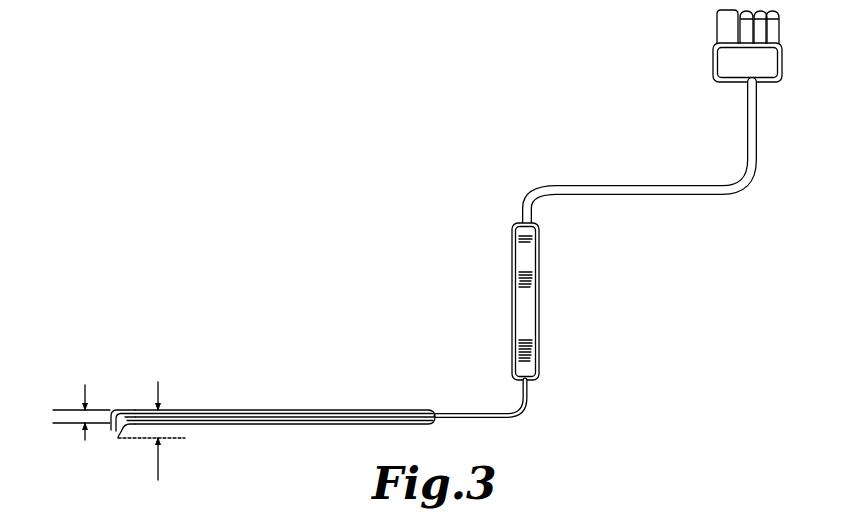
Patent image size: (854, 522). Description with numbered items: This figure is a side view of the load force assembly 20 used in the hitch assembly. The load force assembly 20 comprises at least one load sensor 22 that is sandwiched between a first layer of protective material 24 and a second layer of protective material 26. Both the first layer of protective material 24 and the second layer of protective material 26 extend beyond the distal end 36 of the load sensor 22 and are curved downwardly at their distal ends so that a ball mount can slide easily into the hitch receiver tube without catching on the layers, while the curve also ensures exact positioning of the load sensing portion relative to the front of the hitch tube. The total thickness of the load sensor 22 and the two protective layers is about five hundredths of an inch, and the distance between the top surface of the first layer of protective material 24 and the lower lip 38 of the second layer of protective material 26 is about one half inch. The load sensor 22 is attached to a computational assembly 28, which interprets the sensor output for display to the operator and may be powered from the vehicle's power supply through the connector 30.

The load force assembly 20 is at (273, 409).
The load sensor 22 is at (300, 424).
The first layer of protective material 24 is at (377, 408).
The second layer of protective material 26 is at (220, 424).
The computational assembly 28 is at (540, 275).
The connector 30 is at (713, 68).
The distal end 36 is at (141, 410).
The lower lip 38 is at (117, 443).